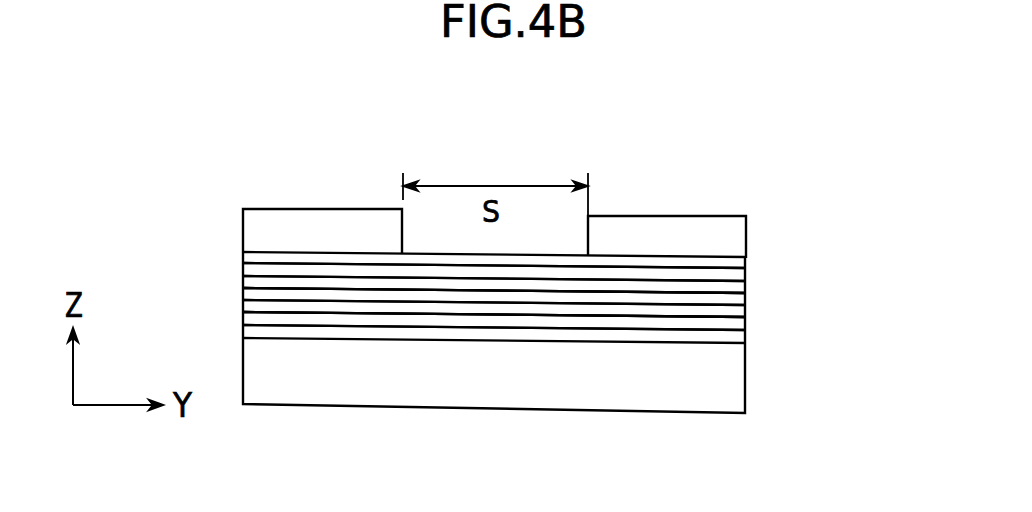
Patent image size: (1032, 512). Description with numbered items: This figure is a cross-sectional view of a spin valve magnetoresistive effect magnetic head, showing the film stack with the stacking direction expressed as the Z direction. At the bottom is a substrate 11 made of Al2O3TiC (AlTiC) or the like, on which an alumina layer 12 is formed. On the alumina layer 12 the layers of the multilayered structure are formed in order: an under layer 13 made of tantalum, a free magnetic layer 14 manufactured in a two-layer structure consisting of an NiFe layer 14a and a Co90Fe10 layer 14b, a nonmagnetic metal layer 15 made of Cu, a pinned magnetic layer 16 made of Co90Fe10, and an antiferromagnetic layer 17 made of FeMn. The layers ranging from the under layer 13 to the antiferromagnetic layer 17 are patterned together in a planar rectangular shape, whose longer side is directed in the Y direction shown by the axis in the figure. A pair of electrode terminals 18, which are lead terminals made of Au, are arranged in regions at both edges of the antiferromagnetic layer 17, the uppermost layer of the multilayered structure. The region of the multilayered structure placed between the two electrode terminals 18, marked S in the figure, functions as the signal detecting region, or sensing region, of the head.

The substrate 11 is at (327, 387).
The alumina layer 12 is at (505, 339).
The under layer 13 is at (747, 330).
The free magnetic layer 14 is at (865, 282).
The NiFe layer 14a is at (747, 315).
The Co90Fe10 layer 14b is at (747, 298).
The nonmagnetic metal layer 15 is at (747, 288).
The pinned magnetic layer 16 is at (747, 275).
The antiferromagnetic layer 17 is at (733, 262).
The electrode terminals 18 is at (278, 223).